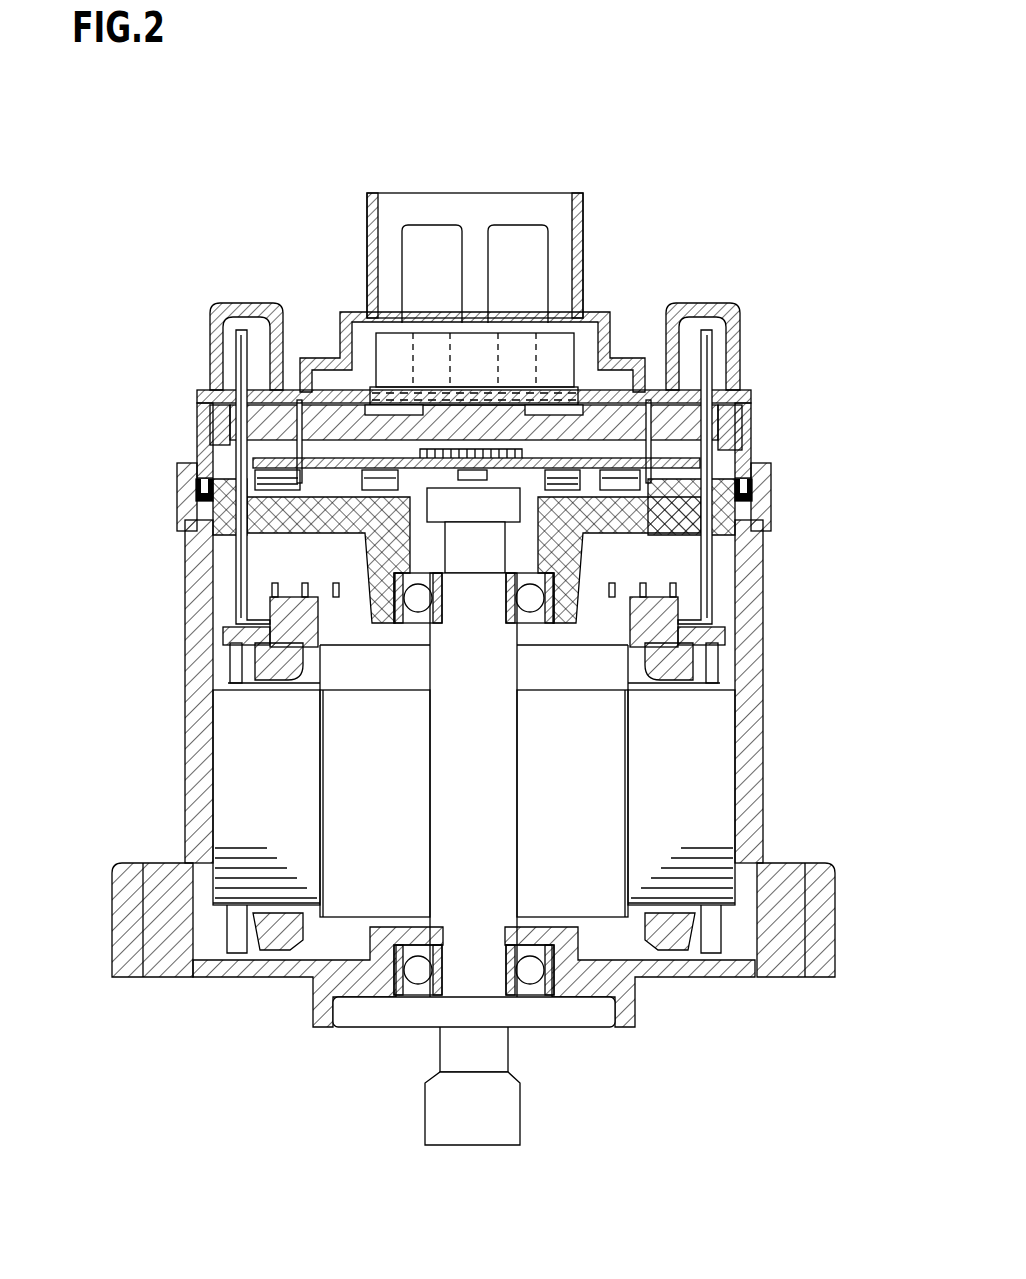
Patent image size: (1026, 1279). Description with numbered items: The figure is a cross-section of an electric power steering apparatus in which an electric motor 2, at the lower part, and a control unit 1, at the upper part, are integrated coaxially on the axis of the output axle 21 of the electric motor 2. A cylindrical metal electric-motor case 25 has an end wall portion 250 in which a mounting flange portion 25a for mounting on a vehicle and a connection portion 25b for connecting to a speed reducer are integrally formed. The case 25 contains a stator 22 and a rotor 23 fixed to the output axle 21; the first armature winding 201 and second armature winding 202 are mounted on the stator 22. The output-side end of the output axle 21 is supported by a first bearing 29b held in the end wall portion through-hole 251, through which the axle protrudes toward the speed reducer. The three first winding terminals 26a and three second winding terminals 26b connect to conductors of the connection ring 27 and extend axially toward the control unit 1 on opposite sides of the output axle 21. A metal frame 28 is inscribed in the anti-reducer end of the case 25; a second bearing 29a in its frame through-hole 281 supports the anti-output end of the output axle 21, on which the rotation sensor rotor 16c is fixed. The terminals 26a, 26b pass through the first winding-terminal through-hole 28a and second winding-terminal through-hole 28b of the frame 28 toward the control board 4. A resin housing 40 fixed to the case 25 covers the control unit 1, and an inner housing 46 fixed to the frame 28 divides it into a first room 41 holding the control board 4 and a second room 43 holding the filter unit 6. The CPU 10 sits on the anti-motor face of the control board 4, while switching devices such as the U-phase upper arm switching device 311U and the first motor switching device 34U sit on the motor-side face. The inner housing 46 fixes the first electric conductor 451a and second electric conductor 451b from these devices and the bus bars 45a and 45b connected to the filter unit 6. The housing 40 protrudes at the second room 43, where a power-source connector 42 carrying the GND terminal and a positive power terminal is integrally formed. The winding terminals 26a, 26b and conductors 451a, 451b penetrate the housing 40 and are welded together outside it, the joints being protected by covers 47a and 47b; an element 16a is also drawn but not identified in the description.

The control unit 1 is at (755, 432).
The electric motor 2 is at (760, 842).
The control board 4 is at (253, 461).
The filter unit 6 is at (524, 295).
The CPU 10 is at (287, 443).
The terminal pin 16a is at (655, 570).
The rotation sensor rotor 16c is at (447, 503).
The output axle 21 is at (500, 1112).
The stator 22 is at (707, 783).
The rotor 23 is at (587, 917).
The electric-motor case 25 is at (481, 801).
The mounting flange portion 25a is at (130, 862).
The connection portion 25b is at (322, 990).
The first winding terminals 26a is at (223, 629).
The second winding terminals 26b is at (700, 575).
The connection ring 27 is at (222, 639).
The frame 28 is at (494, 550).
The first winding-terminal through-hole 28a is at (307, 487).
The second winding-terminal through-hole 28b is at (713, 543).
The second bearing 29a is at (555, 600).
The first bearing 29b is at (407, 988).
The housing 40 is at (441, 407).
The first room 41 is at (260, 433).
The power-source connector 42 is at (539, 224).
The second room 43 is at (585, 377).
The bus bar 45a is at (420, 408).
The bus bar 45b is at (522, 410).
The inner housing 46 is at (220, 437).
The cover 47a is at (243, 302).
The cover 47b is at (730, 307).
The first armature winding 201 is at (504, 794).
The second armature winding 202 is at (504, 793).
The end wall portion 250 is at (698, 972).
The end wall portion through-hole 251 is at (437, 883).
The frame through-hole 281 is at (705, 518).
The U-phase upper arm switching device 311U is at (540, 527).
The first motor switching device 34U is at (247, 585).
The first electric conductor 451a is at (260, 442).
The second electric conductor 451b is at (707, 427).
The GND terminal GND is at (535, 246).